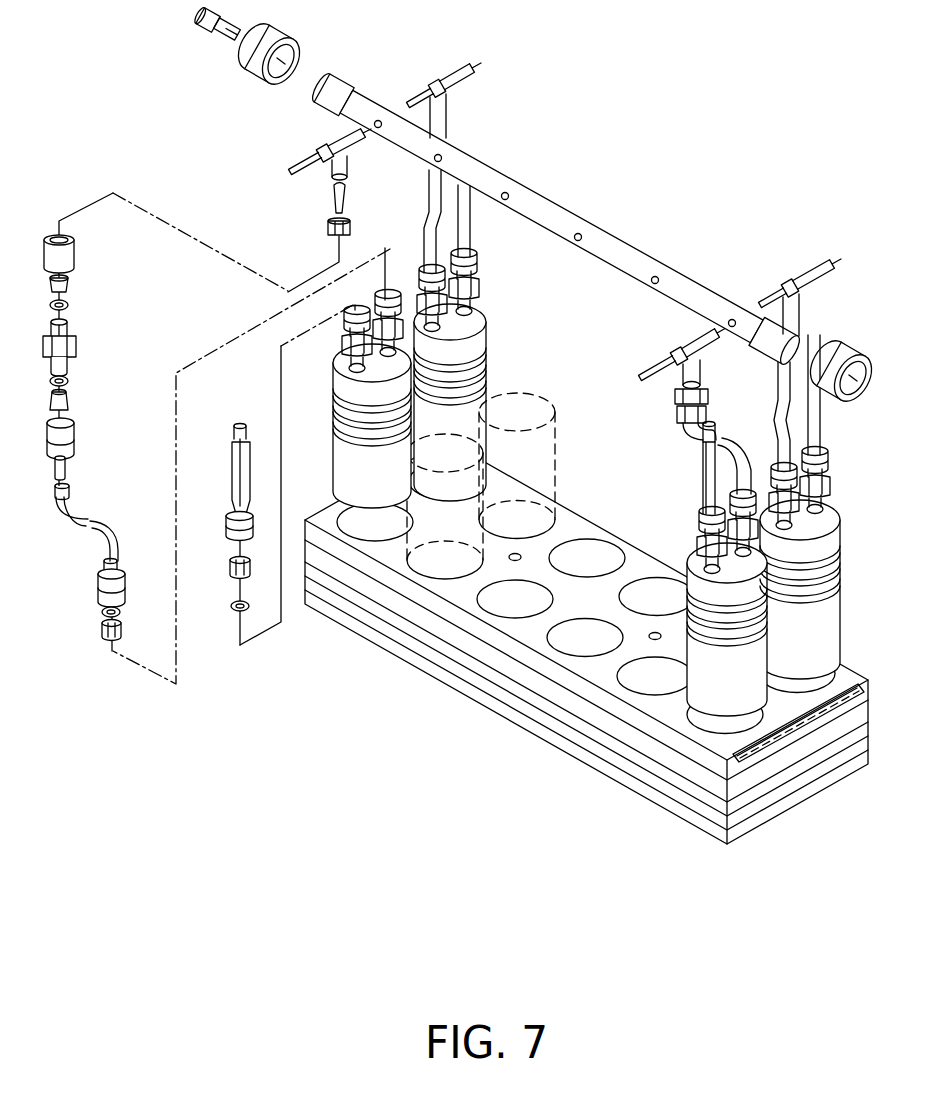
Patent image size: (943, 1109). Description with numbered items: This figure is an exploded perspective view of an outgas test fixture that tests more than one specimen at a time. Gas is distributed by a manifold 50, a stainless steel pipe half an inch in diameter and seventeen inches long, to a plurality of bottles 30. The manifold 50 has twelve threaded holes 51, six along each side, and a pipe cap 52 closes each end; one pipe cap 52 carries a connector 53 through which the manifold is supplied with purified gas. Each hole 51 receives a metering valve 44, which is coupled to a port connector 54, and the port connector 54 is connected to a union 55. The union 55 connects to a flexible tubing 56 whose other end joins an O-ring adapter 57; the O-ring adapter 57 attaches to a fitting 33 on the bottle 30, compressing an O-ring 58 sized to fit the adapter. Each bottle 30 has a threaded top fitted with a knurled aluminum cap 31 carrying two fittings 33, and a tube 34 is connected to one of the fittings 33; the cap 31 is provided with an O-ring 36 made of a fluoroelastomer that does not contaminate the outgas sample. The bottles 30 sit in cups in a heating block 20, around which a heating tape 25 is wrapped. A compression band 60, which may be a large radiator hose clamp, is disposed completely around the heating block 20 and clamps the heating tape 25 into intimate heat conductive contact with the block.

The heating block 20 is at (405, 656).
The heating tape 25 is at (372, 622).
The bottle 30 is at (345, 455).
The cap 31 is at (828, 522).
The fitting 33 is at (399, 293).
The tube 34 is at (232, 474).
The O-ring 36 is at (838, 553).
The metering valve 44 is at (318, 152).
The manifold 50 is at (493, 160).
The threaded hole 51 is at (572, 246).
The pipe cap 52 is at (270, 40).
The connector 53 is at (208, 38).
The port connector 54 is at (331, 206).
The union 55 is at (75, 345).
The flexible tubing 56 is at (78, 508).
The O-ring adapter 57 is at (118, 575).
The O-ring 58 is at (118, 613).
The compression band 60 is at (595, 728).